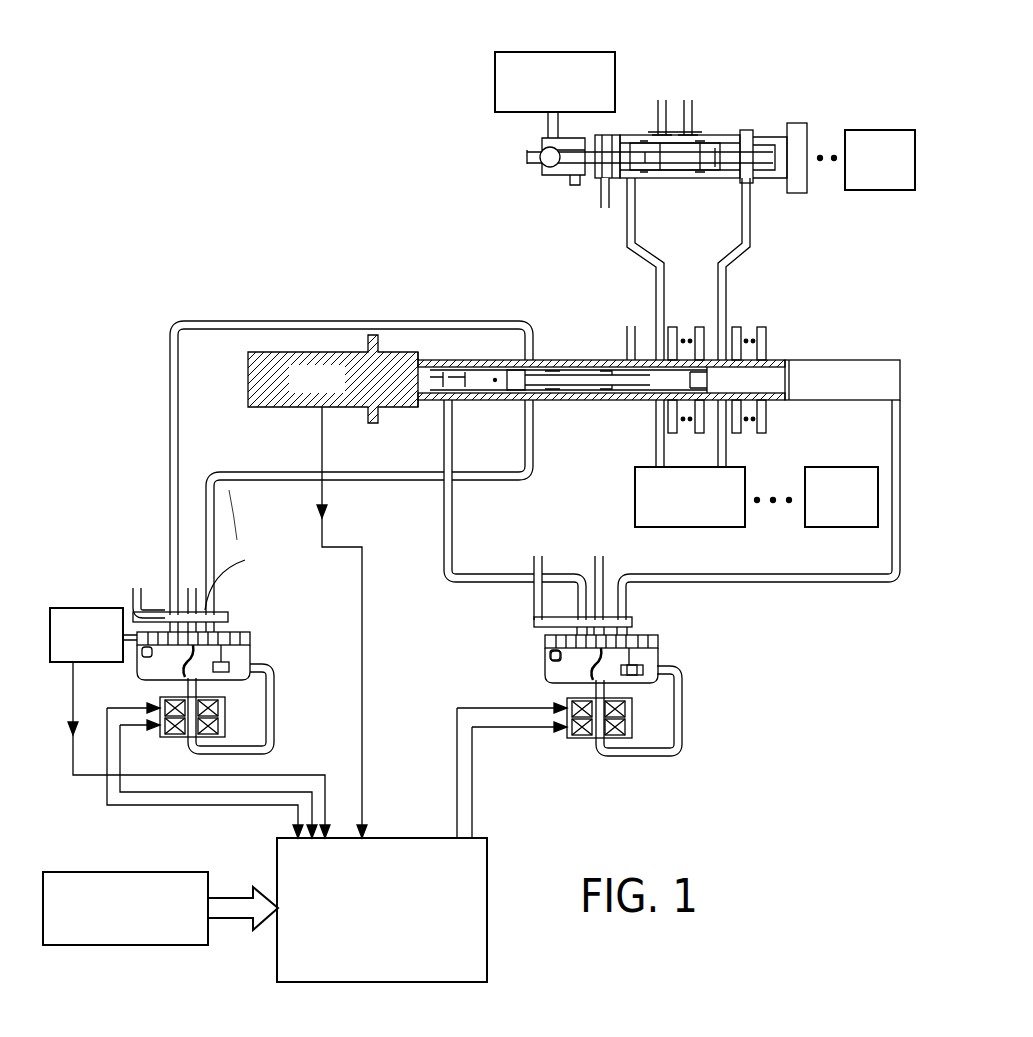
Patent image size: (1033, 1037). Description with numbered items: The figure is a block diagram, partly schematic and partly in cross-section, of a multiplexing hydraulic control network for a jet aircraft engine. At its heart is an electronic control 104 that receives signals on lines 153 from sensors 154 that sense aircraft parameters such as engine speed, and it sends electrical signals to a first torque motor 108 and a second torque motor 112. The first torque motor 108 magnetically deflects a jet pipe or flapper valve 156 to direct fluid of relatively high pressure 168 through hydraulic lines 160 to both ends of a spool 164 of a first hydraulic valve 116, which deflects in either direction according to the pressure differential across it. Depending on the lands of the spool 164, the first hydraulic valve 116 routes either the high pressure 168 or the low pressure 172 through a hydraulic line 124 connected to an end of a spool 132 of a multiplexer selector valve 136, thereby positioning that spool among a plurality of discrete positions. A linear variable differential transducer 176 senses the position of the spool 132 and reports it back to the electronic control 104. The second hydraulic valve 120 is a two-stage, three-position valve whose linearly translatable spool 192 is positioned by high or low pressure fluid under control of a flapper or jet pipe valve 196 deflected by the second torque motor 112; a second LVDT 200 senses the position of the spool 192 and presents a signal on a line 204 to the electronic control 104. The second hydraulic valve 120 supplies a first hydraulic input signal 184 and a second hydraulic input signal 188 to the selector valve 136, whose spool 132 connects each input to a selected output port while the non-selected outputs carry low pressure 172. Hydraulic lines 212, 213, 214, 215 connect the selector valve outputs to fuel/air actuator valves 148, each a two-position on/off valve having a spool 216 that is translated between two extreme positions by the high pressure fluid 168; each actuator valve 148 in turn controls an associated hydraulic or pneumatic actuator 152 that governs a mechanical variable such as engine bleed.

The electronic control 104 is at (485, 910).
The first torque motor 108 is at (575, 742).
The second torque motor 112 is at (230, 715).
The first hydraulic valve 116 is at (650, 640).
The second hydraulic valve 120 is at (242, 635).
The hydraulic line 124 is at (443, 540).
The spool 132 is at (547, 380).
The multiplexer selector valve 136 is at (826, 350).
The fuel/air actuator valve 148 is at (790, 95).
The actuator 152 is at (540, 52).
The lines 153 is at (226, 917).
The sensors 154 is at (126, 945).
The flapper valve 156 is at (603, 698).
The hydraulic lines 160 is at (656, 658).
The spool 164 is at (550, 655).
The high pressure 168 is at (143, 552).
The low pressure 172 is at (247, 558).
The linear variable differential transducer 176 is at (250, 383).
The first hydraulic input signal 184 is at (355, 322).
The second hydraulic input signal 188 is at (410, 480).
The spool 192 is at (145, 665).
The jet pipe valve 196 is at (195, 698).
The second LVDT 200 is at (93, 613).
The line 204 is at (88, 777).
The hydraulic line 212 is at (630, 236).
The hydraulic line 213 is at (750, 216).
The hydraulic line 214 is at (656, 455).
The hydraulic line 215 is at (727, 449).
The spool 216 is at (720, 143).